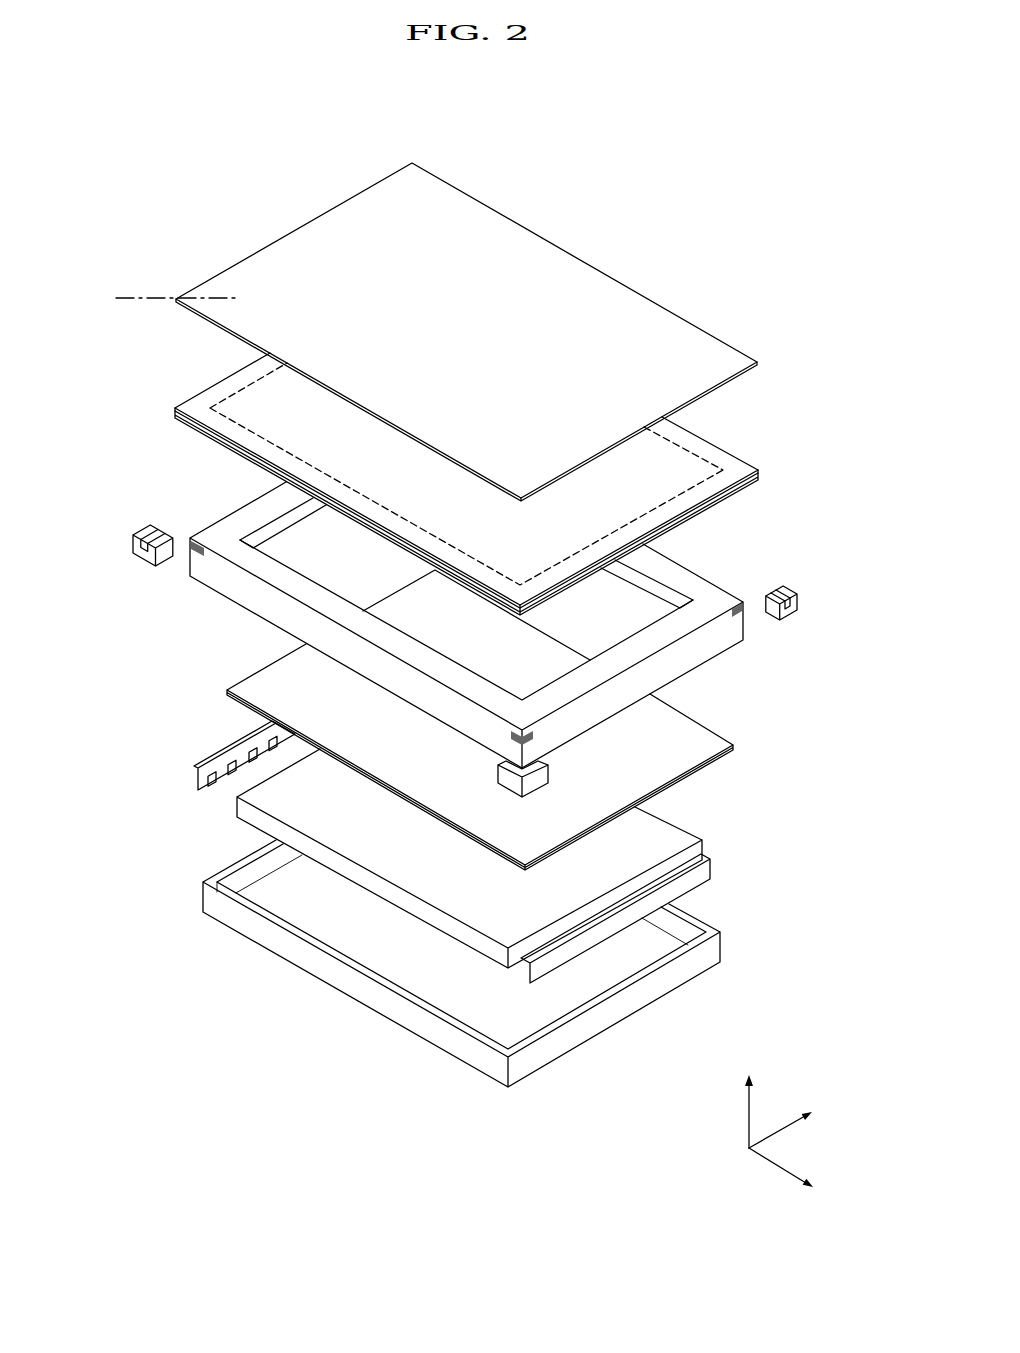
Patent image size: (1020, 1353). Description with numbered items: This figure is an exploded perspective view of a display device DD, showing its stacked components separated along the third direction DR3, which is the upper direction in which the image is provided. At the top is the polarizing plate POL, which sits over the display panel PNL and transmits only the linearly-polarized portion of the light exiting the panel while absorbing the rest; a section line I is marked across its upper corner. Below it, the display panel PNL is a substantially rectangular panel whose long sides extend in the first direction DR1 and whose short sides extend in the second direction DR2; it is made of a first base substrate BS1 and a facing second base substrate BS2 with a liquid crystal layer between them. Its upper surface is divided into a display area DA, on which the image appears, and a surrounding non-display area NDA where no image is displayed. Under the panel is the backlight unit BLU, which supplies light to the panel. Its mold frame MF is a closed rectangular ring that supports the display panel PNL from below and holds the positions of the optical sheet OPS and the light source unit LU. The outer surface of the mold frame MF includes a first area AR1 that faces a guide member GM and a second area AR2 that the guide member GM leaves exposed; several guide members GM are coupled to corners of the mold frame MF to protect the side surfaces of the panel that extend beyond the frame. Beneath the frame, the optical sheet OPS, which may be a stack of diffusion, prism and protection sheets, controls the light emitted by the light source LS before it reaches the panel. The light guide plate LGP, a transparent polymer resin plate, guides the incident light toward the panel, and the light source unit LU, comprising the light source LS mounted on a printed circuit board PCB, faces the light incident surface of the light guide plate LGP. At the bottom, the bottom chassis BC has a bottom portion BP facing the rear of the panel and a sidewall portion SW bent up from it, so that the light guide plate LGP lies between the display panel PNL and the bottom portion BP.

The display device DD is at (597, 226).
The polarizing plate POL is at (719, 355).
The display panel PNL is at (832, 432).
The second base substrate BS2 is at (718, 455).
The first base substrate BS1 is at (720, 502).
The display area DA is at (250, 398).
The non-display area NDA is at (215, 414).
The guide member GM is at (131, 541).
The first area AR1 is at (192, 548).
The second area AR2 is at (220, 569).
The mold frame MF is at (733, 628).
The backlight unit BLU is at (822, 630).
The optical sheet OPS is at (748, 745).
The light source unit LU is at (125, 745).
The light source LS is at (232, 767).
The printed circuit board PCB is at (203, 788).
The light guide plate LGP is at (688, 838).
The bottom chassis BC is at (826, 920).
The bottom portion BP is at (667, 944).
The sidewall portion SW is at (710, 953).
The section line I-I' I is at (235, 290).
The first direction DR1 is at (799, 1177).
The second direction DR2 is at (799, 1123).
The third direction DR3 is at (749, 1100).